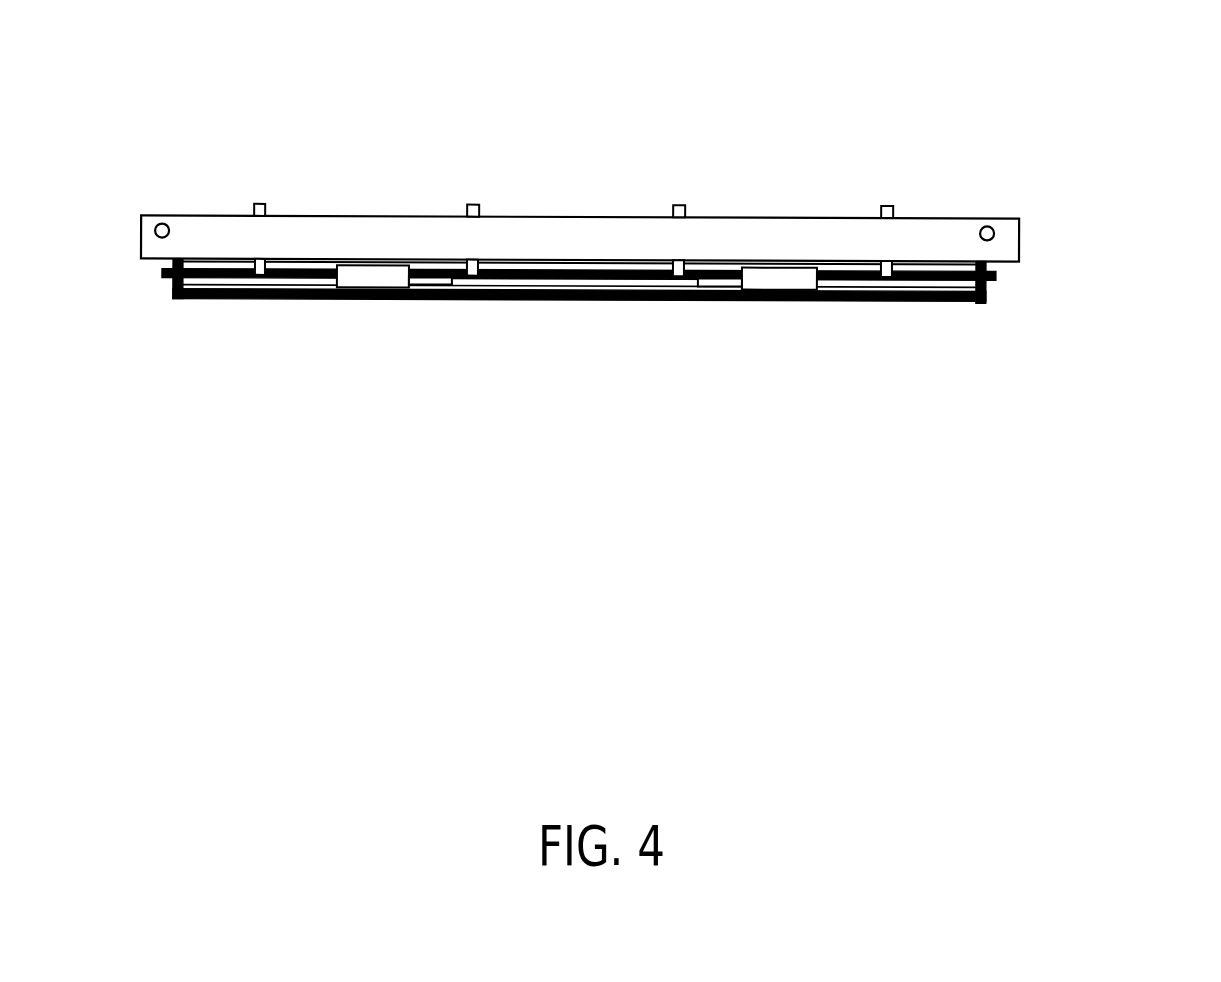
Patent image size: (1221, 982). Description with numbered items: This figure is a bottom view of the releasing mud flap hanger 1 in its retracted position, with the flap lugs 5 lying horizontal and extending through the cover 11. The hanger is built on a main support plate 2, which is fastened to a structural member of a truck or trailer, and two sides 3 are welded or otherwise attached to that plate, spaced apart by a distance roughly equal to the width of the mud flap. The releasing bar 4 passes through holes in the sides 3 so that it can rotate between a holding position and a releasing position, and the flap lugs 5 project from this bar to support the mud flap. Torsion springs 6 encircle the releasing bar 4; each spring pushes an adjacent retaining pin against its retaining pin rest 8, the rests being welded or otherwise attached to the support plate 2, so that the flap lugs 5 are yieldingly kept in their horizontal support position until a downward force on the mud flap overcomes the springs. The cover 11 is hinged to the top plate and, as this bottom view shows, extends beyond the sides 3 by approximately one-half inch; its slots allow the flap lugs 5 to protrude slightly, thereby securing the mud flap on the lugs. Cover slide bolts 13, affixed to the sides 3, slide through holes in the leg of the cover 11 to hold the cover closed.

The releasing mud flap hanger 1 is at (625, 268).
The main support plate 2 is at (270, 302).
The sides 3 is at (172, 289).
The releasing bar 4 is at (162, 276).
The flap lugs 5 is at (258, 205).
The torsion springs 6 is at (370, 281).
The retaining pin rests 8 is at (423, 284).
The cover 11 is at (538, 213).
The cover slide bolts 13 is at (162, 224).